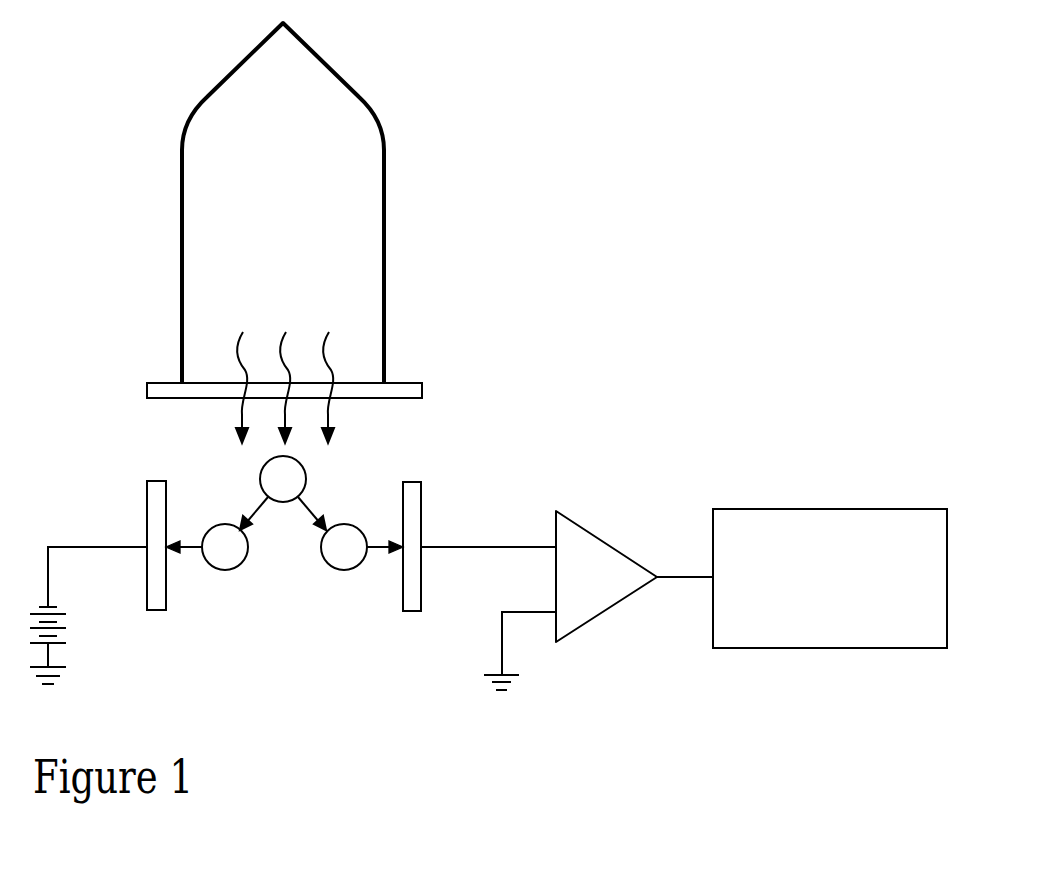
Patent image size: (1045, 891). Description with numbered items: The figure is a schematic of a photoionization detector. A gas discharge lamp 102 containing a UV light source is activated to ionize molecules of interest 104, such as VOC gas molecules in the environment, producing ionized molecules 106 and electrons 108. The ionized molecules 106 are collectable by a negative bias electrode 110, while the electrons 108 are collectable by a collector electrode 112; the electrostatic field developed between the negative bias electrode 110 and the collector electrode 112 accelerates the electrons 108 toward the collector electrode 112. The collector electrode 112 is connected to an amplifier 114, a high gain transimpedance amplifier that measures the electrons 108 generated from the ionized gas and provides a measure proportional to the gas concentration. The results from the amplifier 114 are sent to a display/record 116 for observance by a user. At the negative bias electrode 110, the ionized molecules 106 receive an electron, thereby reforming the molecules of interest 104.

The gas discharge lamp 102 is at (386, 162).
The molecules of interest 104 is at (305, 475).
The ionized molecules 106 is at (223, 569).
The electrons 108 is at (347, 569).
The negative bias electrode 110 is at (148, 506).
The collector electrode 112 is at (421, 510).
The amplifier 114 is at (595, 537).
The display/record 116 is at (835, 509).